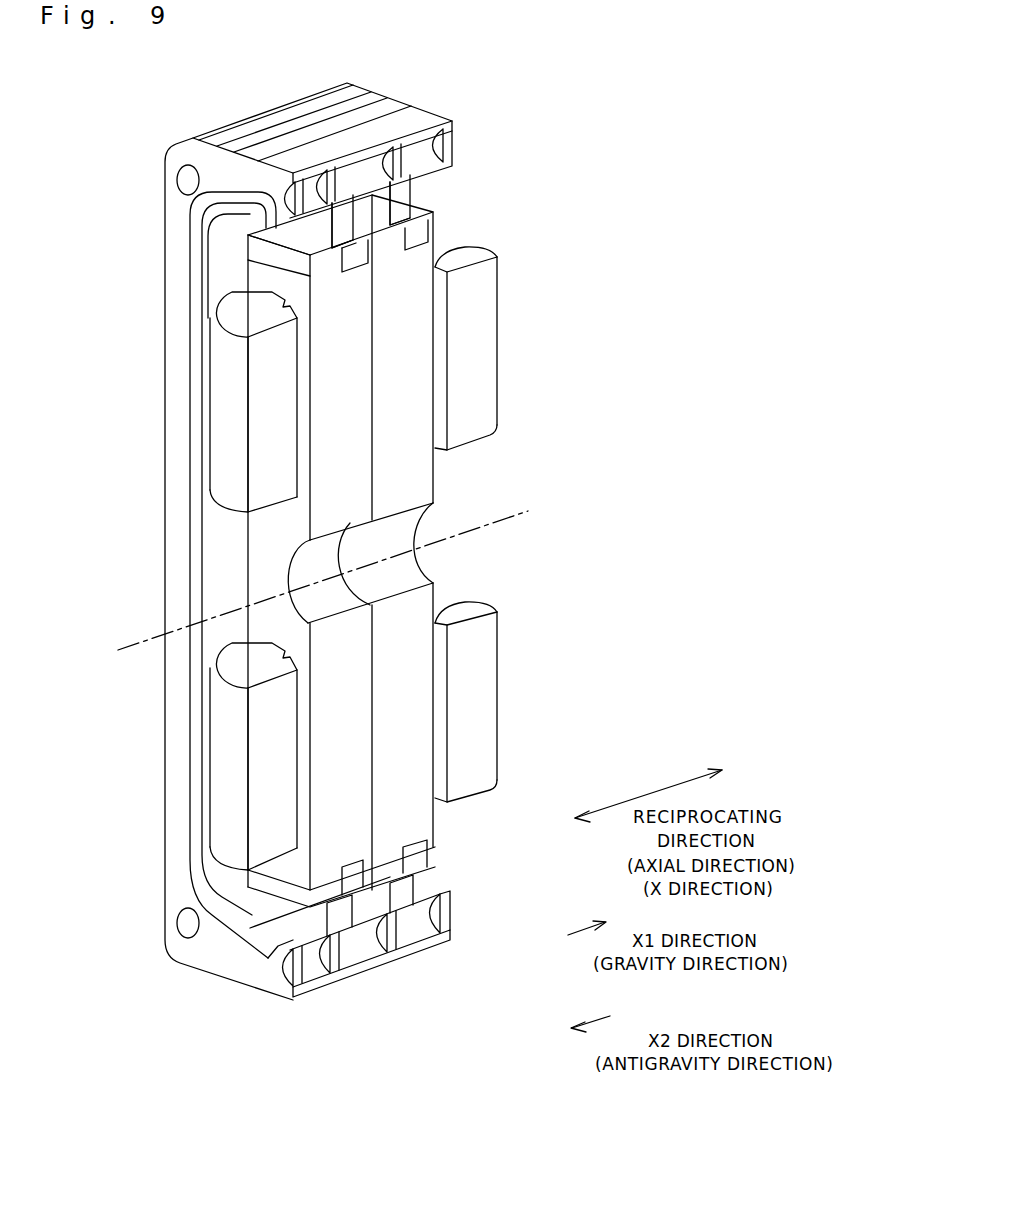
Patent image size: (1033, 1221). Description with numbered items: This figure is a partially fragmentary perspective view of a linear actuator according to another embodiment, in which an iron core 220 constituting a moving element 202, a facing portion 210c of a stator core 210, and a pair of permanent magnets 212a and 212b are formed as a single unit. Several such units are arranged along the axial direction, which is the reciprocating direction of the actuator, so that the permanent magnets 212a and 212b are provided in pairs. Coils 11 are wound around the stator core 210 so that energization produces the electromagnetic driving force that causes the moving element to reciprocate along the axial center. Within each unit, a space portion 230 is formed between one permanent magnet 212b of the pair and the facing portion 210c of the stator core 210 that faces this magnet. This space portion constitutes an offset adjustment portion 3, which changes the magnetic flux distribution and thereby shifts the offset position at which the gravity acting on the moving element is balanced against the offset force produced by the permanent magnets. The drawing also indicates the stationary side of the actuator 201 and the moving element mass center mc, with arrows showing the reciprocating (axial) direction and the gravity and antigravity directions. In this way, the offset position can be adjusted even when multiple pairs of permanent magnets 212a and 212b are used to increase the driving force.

The offset adjustment portion 3 is at (592, 262).
The coil 11 is at (258, 401).
The stationary body 201 is at (540, 437).
The moving element 202 is at (413, 104).
The stator core 210 is at (330, 506).
The facing portion 210c is at (437, 238).
The permanent magnet 212a is at (262, 237).
The permanent magnet 212b is at (428, 208).
The iron core 220 is at (342, 213).
The space portion 230 is at (420, 247).
The movable core mc is at (630, 372).